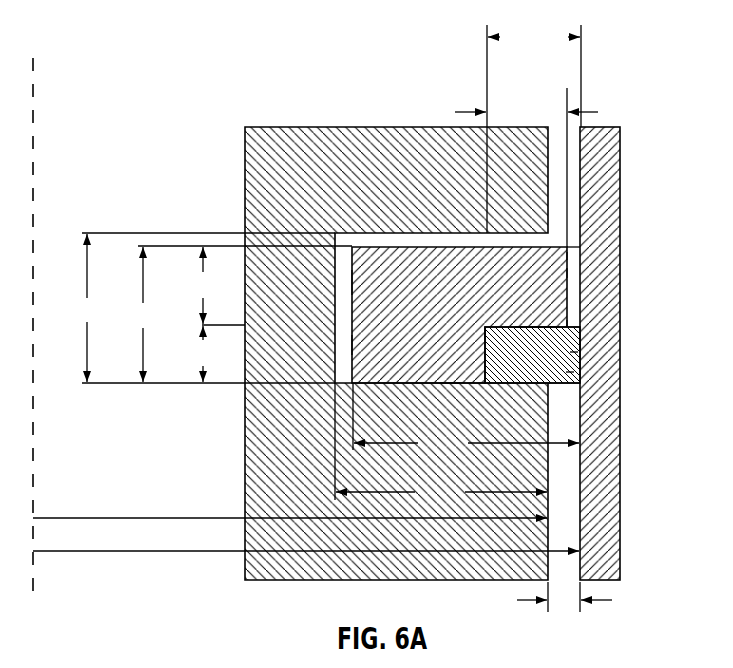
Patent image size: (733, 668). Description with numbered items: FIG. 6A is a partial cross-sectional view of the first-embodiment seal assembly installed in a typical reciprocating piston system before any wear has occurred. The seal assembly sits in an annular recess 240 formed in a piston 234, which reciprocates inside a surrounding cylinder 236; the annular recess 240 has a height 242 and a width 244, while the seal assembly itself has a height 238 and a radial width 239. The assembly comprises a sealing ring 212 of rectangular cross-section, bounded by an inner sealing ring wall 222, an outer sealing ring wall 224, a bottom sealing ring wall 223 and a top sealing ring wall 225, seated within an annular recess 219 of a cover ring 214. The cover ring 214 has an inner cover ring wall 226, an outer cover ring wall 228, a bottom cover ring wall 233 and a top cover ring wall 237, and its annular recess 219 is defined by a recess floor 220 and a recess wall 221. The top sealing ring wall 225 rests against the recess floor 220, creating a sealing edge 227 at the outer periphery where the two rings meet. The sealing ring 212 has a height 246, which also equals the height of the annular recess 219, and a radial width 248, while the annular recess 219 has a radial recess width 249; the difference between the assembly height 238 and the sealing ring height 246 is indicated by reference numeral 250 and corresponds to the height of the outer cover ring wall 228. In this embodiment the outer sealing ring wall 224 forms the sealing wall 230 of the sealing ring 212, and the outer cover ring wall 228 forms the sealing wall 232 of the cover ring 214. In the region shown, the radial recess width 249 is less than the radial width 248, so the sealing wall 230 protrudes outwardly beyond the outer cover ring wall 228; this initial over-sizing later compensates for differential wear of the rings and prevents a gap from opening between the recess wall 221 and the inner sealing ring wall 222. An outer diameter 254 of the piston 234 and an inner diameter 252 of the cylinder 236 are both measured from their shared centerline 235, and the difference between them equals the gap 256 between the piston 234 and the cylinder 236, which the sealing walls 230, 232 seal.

The sealing ring 212 is at (570, 375).
The cover ring 214 is at (569, 273).
The annular recess 219 is at (547, 321).
The recess floor 220 is at (567, 328).
The recess wall 221 is at (491, 368).
The inner sealing ring wall 222 is at (486, 327).
The bottom sealing ring wall 223 is at (560, 387).
The outer sealing ring wall 224 is at (584, 346).
The top sealing ring wall 225 is at (523, 322).
The inner cover ring wall 226 is at (350, 283).
The sealing edge 227 is at (578, 324).
The outer cover ring wall 228 is at (571, 247).
The sealing wall 230 is at (574, 355).
The sealing wall 232 is at (569, 256).
The bottom cover ring wall 233 is at (450, 386).
The piston 234 is at (277, 150).
The centerline 235 is at (33, 186).
The cylinder 236 is at (607, 180).
The top cover ring wall 237 is at (392, 246).
The height 238 is at (238, 314).
The radial width 239 is at (466, 420).
The annular recess 240 is at (349, 345).
The height 242 is at (202, 308).
The width 244 is at (441, 445).
The height 246 is at (203, 354).
The radial width 248 is at (534, 127).
The radial recess width 249 is at (464, 110).
The height difference 250 is at (215, 286).
The inner diameter 252 is at (173, 552).
The outer diameter 254 is at (147, 517).
The gap 256 is at (564, 604).